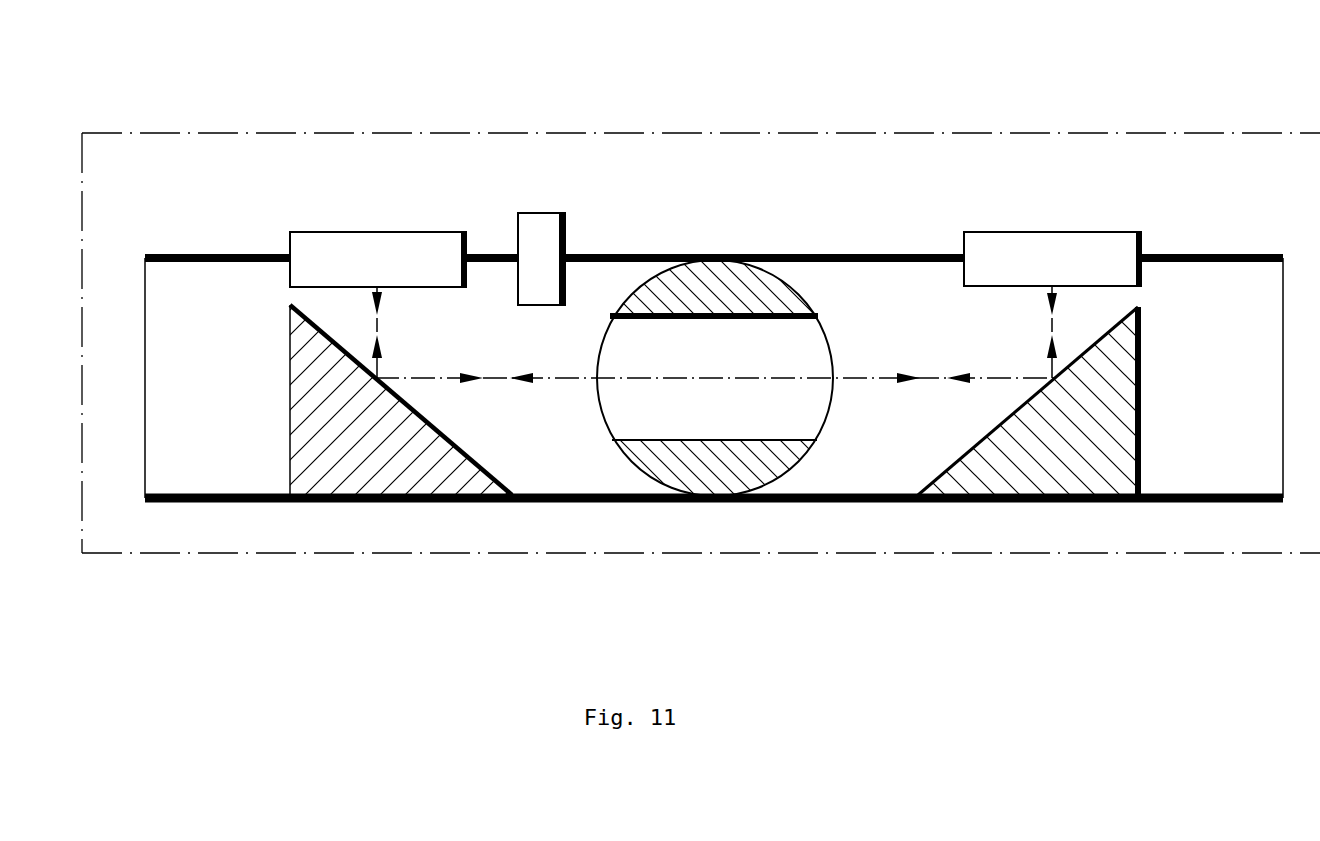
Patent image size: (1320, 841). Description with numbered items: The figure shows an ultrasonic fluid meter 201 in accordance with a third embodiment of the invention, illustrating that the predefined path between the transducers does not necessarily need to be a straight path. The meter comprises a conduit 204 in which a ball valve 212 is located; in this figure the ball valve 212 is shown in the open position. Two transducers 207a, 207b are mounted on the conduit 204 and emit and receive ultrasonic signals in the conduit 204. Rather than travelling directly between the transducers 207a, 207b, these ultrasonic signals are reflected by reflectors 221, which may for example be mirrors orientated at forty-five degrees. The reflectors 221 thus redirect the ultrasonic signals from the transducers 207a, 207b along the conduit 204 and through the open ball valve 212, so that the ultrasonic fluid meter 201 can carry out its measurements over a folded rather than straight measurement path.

The ultrasonic fluid meter 201 is at (1275, 132).
The conduit 204 is at (928, 268).
The transducer 207a is at (357, 250).
The transducer 207b is at (1052, 247).
The ball valve 212 is at (810, 268).
The reflector 221 is at (335, 503).